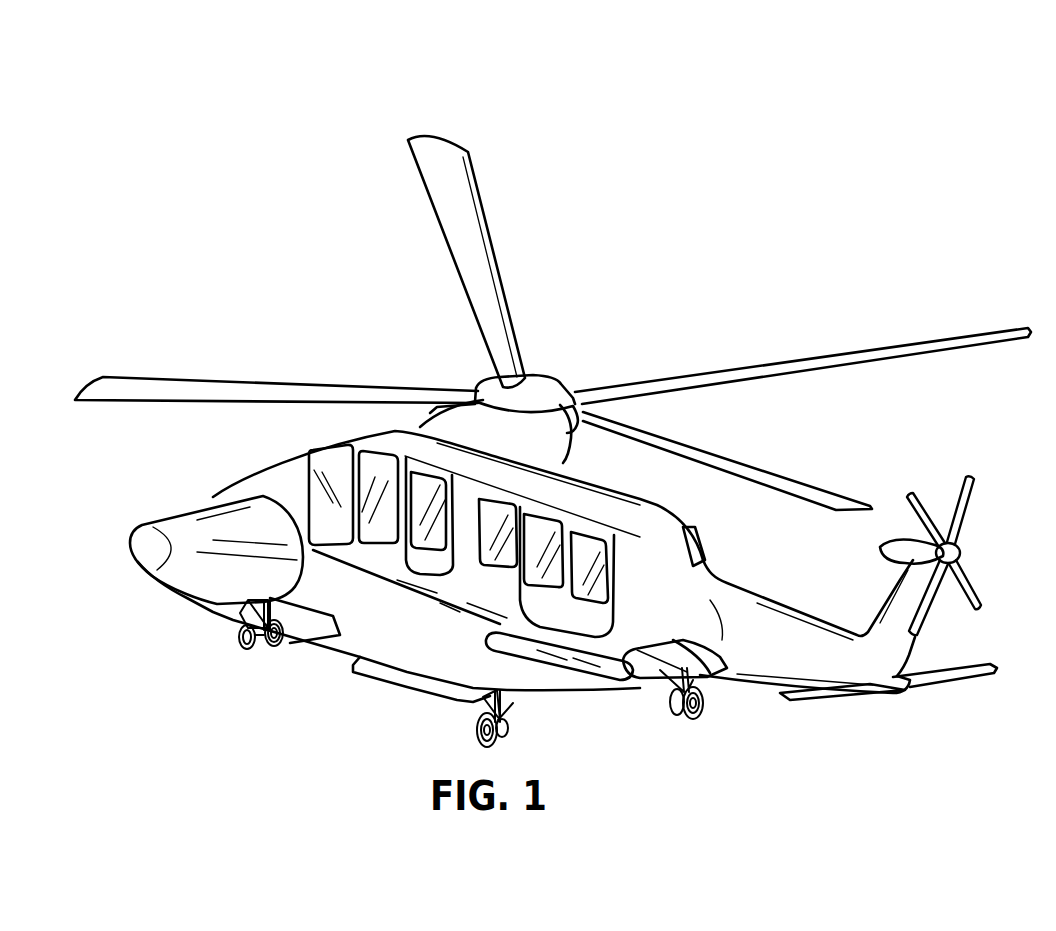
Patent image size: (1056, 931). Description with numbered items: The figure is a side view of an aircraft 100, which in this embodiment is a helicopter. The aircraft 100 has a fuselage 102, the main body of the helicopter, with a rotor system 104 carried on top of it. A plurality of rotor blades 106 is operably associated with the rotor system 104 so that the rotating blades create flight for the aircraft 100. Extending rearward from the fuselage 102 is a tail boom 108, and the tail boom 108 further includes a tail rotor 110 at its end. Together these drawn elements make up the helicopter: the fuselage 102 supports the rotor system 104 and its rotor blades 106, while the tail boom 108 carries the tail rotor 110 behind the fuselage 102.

The aircraft 100 is at (223, 120).
The fuselage 102 is at (348, 642).
The rotor system 104 is at (564, 348).
The rotor blades 106 is at (783, 377).
The tail boom 108 is at (760, 670).
The tail rotor 110 is at (962, 525).